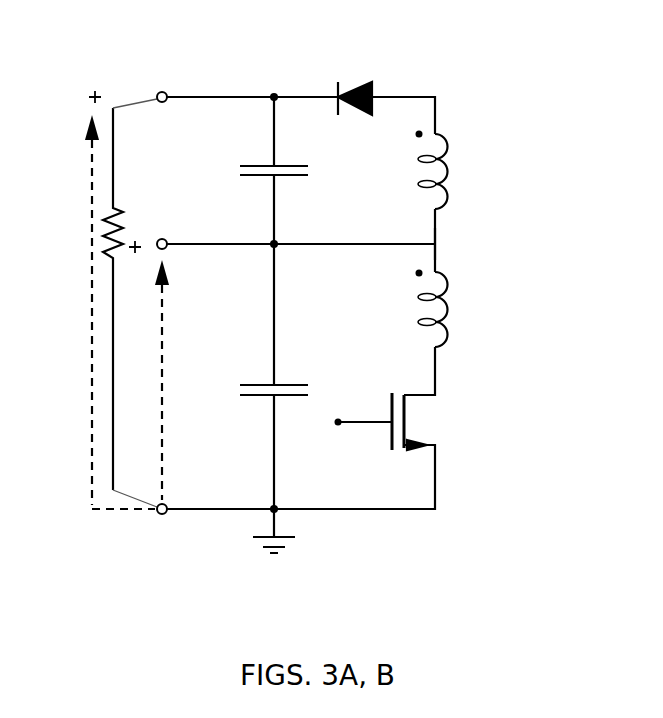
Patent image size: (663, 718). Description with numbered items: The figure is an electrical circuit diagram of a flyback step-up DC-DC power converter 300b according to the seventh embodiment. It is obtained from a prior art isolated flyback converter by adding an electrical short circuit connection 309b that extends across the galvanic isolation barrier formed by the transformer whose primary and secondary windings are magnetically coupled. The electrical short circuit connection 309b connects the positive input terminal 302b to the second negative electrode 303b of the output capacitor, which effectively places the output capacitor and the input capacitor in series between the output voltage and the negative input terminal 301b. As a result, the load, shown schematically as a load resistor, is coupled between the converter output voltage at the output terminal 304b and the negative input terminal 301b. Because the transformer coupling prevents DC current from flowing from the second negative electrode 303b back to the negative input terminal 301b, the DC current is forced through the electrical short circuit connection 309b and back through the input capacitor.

The flyback step-up DC-DC power converter 300b is at (133, 582).
The negative input terminal 301b is at (157, 517).
The positive input terminal 302b is at (165, 237).
The second negative electrode of the output capacitor 303b is at (436, 238).
The output terminal 304b is at (160, 90).
The electrical short circuit connection 309b is at (317, 242).